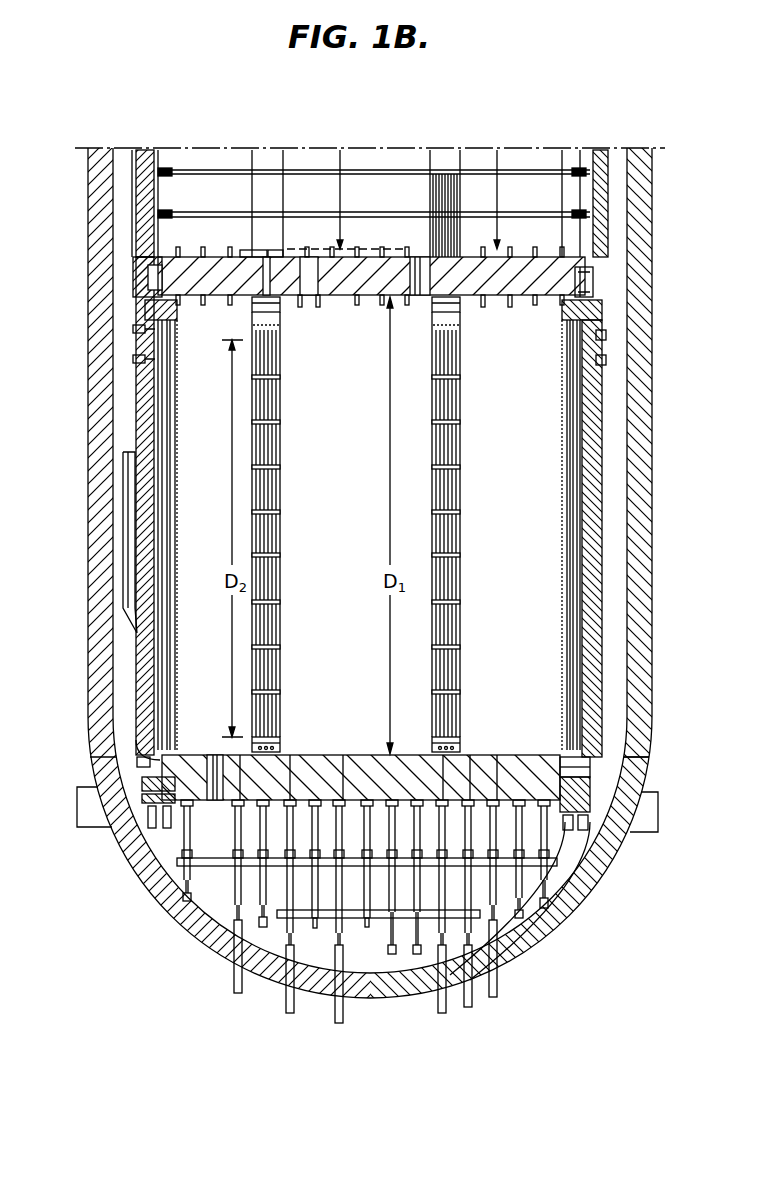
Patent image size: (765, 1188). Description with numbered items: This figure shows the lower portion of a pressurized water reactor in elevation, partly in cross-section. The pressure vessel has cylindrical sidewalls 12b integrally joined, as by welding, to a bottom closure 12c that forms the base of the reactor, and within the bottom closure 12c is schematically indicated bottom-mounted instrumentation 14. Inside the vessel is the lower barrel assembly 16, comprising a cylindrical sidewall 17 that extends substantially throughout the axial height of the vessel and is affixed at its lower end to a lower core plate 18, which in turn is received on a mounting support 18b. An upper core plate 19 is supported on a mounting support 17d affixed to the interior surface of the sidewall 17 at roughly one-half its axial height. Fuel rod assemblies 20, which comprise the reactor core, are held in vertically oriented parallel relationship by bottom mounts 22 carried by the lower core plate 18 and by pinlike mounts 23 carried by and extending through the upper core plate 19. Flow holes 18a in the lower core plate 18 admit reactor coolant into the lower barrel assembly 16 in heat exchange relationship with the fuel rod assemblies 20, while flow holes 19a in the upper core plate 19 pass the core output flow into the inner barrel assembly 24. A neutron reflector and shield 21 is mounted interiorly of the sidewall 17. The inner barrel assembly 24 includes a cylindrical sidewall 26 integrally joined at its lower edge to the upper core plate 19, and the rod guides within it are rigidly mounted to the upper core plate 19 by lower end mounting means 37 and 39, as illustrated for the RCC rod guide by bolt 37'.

The cylindrical sidewalls 12b is at (652, 688).
The bottom closure 12c is at (618, 846).
The bottom-mounted instrumentation 14 is at (400, 950).
The lower barrel assembly 16 is at (122, 400).
The cylindrical sidewall 17 is at (137, 428).
The mounting support 17d is at (593, 288).
The lower core plate 18 is at (324, 757).
The flow holes 18a is at (221, 755).
The mounting support 18b is at (578, 872).
The upper core plate 19 is at (524, 257).
The flow holes 19a is at (319, 307).
The fuel rod assemblies 20 is at (432, 497).
The neutron reflector and shield 21 is at (174, 392).
The bottom mounts 22 is at (277, 748).
The pinlike mounts 23 is at (510, 307).
The inner barrel assembly 24 is at (258, 148).
The cylindrical sidewall 26 is at (150, 150).
The mounting means 37 is at (244, 236).
The bolt 37' is at (272, 222).
The mounting means 39 is at (430, 255).